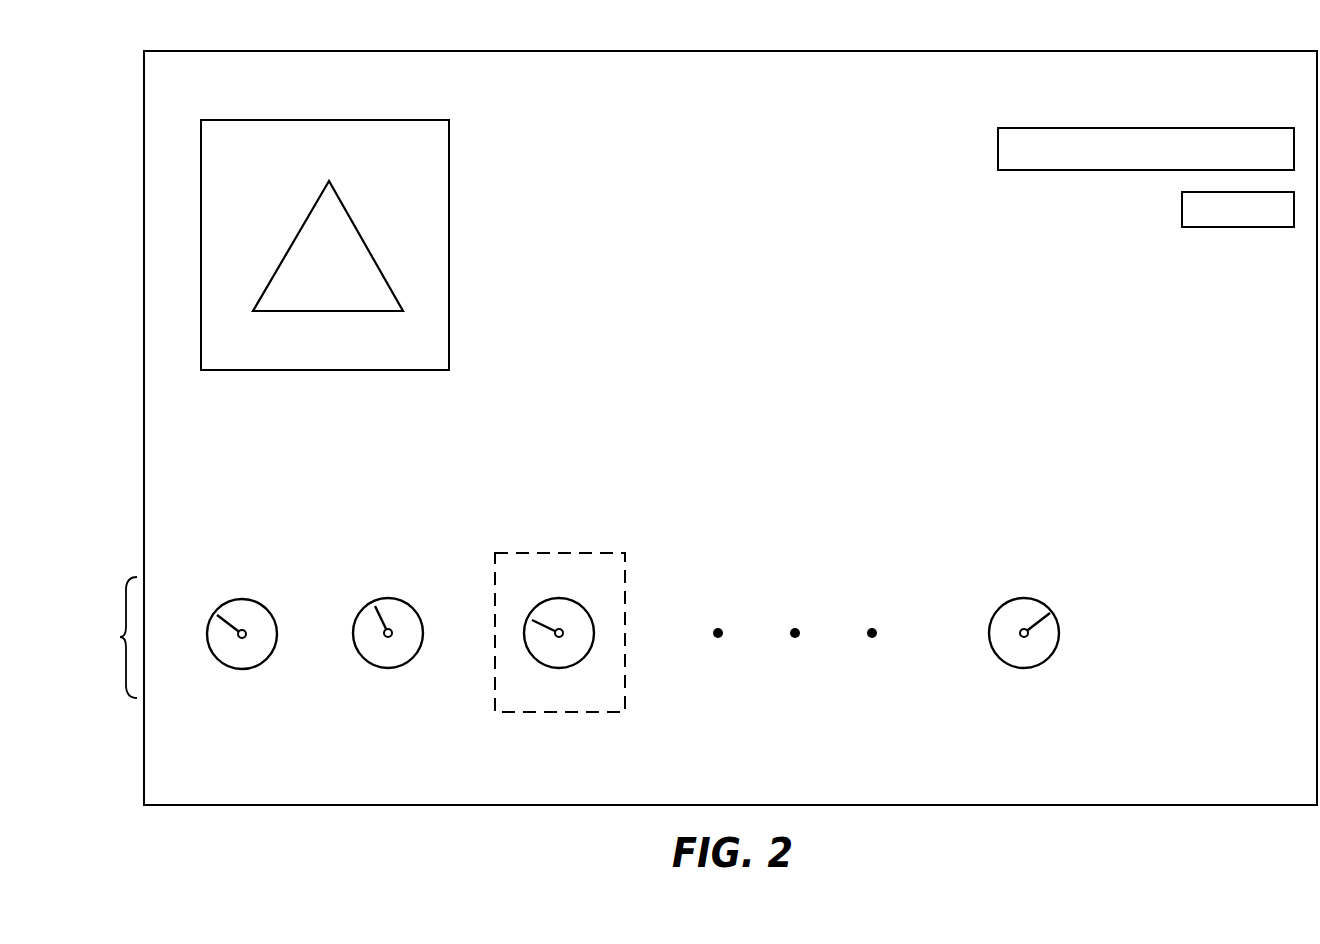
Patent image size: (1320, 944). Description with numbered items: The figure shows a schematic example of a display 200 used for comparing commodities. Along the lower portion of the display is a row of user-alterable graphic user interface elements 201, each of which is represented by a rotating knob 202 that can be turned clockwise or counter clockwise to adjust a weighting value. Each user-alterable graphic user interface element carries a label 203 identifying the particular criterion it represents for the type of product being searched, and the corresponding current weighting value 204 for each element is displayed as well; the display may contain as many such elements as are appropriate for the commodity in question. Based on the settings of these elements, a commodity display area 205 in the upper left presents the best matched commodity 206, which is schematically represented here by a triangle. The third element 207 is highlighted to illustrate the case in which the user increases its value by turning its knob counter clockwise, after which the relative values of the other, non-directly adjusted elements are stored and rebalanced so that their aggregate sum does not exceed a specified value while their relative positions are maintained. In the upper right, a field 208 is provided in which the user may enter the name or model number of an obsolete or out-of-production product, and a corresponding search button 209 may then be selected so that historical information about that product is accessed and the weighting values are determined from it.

The display 200 is at (758, 418).
The row of user-alterable graphic user interface elements 201 is at (581, 629).
The rotating knobs 202 is at (210, 622).
The label 203 is at (242, 702).
The current weighting value 204 is at (242, 563).
The commodity display area 205 is at (255, 119).
The best matched commodity 206 is at (305, 220).
The third element 207 is at (557, 553).
The field 208 is at (1012, 128).
The search button 209 is at (1232, 227).